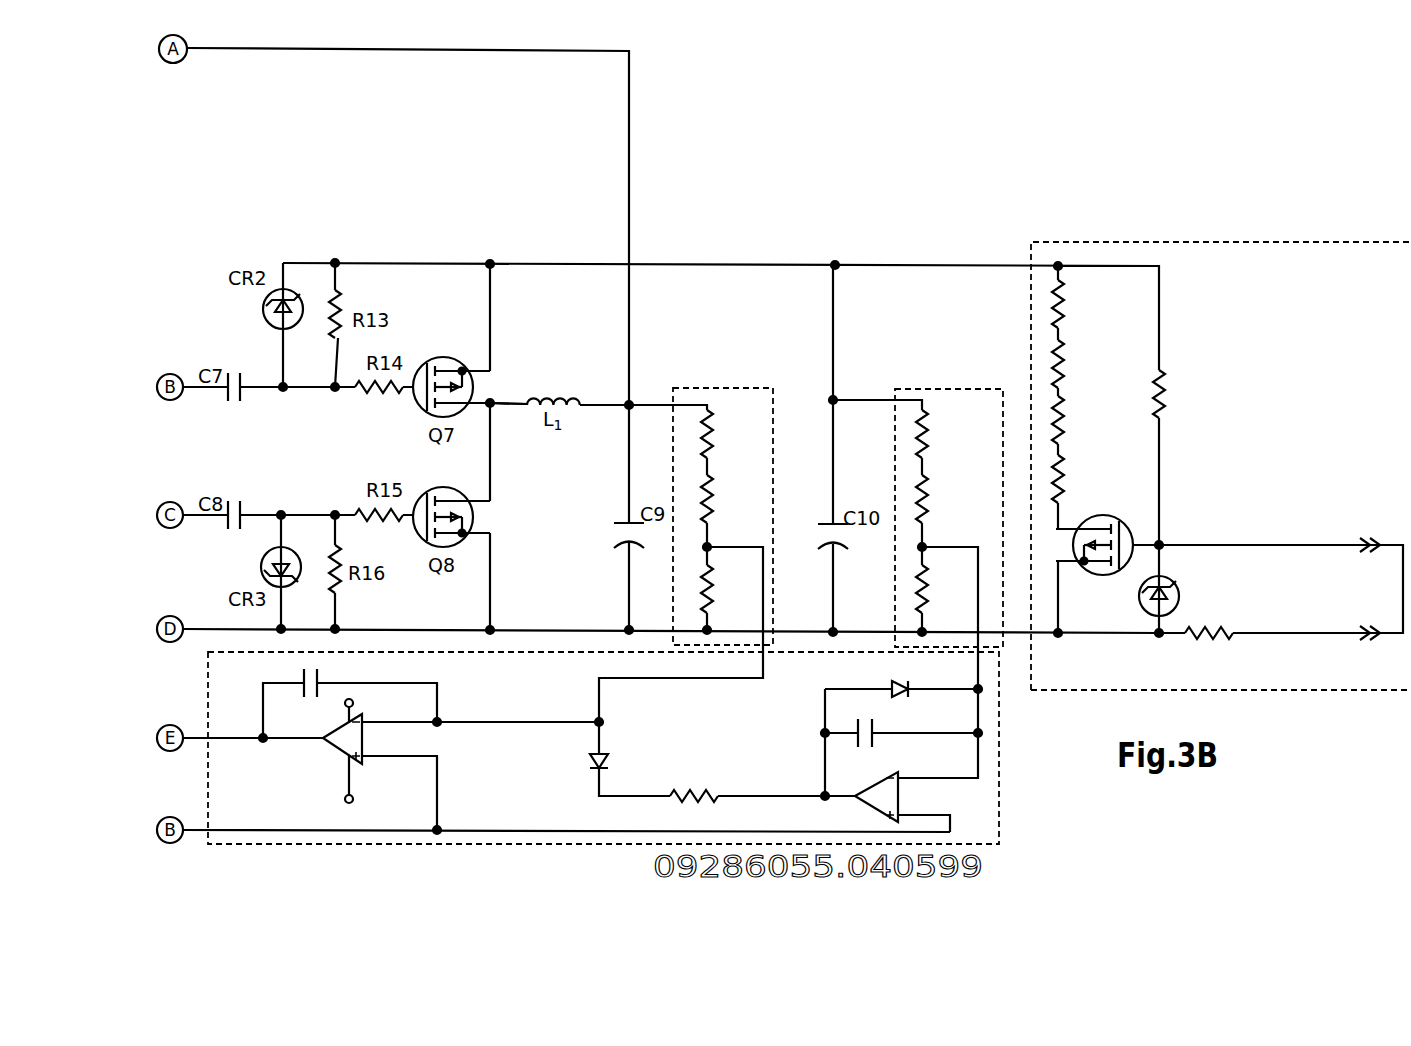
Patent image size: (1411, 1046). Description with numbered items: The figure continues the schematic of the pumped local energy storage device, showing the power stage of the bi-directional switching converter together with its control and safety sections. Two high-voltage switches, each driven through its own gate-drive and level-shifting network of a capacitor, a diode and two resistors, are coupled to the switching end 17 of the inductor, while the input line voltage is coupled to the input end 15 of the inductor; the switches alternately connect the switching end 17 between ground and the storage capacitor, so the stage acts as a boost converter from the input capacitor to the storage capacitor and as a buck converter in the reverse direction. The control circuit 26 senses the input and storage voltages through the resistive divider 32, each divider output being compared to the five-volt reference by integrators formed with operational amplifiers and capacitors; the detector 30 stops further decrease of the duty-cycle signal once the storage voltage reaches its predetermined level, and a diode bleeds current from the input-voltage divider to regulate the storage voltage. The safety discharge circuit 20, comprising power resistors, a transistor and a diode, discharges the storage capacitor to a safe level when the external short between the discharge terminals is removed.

The input end 15 is at (604, 392).
The switching end 17 is at (509, 391).
The safety discharge circuit 20 is at (1243, 242).
The control circuit 26 is at (1000, 780).
The detector 30 is at (930, 389).
The resistive divider 32 is at (700, 388).